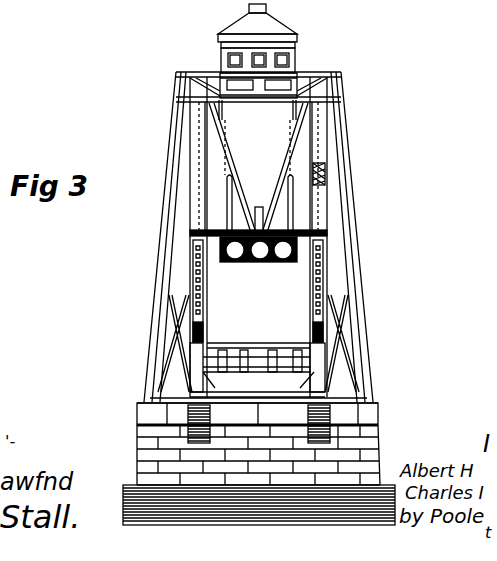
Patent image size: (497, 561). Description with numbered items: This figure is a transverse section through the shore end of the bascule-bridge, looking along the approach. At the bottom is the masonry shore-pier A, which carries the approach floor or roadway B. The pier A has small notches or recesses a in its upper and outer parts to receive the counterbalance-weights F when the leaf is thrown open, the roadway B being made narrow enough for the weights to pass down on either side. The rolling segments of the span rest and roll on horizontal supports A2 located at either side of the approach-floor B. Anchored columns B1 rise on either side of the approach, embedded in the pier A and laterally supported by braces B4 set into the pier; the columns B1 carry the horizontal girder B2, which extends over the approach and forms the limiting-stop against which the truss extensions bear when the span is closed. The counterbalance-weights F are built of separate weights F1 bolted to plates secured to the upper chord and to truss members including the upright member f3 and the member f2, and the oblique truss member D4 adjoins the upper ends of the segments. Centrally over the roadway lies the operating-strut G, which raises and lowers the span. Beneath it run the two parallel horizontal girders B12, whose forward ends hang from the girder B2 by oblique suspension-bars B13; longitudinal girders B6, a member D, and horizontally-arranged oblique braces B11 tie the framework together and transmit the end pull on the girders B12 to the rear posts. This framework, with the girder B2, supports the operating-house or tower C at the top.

The operating-house C is at (291, 32).
The horizontal beam or girder B2 is at (300, 75).
The counterbalance-weights F is at (200, 150).
The anchored columns B1 is at (190, 302).
The separate weights F1 is at (313, 172).
The block f2 is at (325, 180).
The upright truss member f3 is at (200, 182).
The oblique suspension-bars B13 is at (288, 140).
The truss member D4 is at (213, 228).
The operating-strut G is at (259, 207).
The floor bar D is at (195, 260).
The horizontally-arranged oblique braces B11 is at (230, 262).
The parallel horizontal beams B12 is at (258, 262).
The horizontal girders B6 is at (193, 245).
The lateral braces B4 is at (166, 333).
The horizontal supports A2 is at (197, 366).
The approach floor or roadway B is at (257, 359).
The notches or recesses a is at (210, 418).
The shore-pier A is at (259, 464).